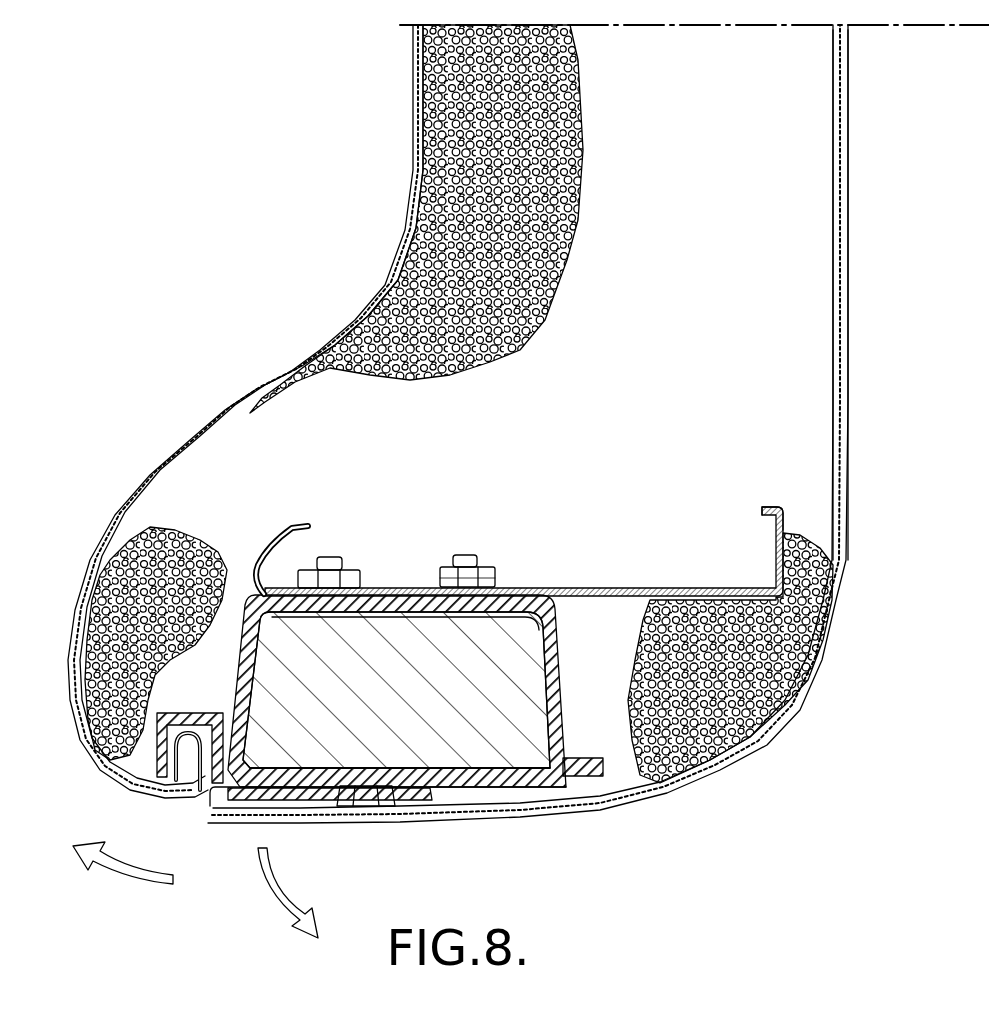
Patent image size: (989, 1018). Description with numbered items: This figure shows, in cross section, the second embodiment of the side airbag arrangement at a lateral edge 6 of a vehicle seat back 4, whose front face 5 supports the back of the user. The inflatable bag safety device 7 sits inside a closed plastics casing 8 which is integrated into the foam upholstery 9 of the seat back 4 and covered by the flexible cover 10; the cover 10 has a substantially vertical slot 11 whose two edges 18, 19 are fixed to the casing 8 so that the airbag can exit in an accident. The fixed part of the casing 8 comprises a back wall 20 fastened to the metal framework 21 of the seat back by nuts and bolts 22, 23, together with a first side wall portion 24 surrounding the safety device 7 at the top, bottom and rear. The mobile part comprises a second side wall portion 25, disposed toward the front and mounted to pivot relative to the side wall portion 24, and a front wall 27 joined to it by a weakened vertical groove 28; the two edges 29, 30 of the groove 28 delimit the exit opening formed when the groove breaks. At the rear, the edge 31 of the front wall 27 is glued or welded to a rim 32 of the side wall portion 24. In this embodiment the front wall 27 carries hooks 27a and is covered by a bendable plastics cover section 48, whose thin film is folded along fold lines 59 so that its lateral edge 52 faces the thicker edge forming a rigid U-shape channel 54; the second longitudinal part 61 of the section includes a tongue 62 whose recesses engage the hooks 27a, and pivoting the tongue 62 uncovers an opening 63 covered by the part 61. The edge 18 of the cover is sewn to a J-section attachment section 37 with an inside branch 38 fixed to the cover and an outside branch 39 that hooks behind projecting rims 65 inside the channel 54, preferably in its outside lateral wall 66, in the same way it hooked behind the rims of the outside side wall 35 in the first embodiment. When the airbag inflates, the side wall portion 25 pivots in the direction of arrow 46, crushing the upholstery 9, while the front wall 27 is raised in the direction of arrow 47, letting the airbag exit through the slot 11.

The seat back 4 is at (798, 102).
The front face 5 is at (412, 95).
The lateral edge 6 is at (680, 791).
The inflatable bag safety device 7 is at (556, 589).
The casing 8 is at (588, 607).
The foam upholstery 9 is at (98, 570).
The cover 10 is at (228, 400).
The slot 11 is at (205, 818).
The edge of the slot 18 is at (203, 793).
The edge of the slot 19 is at (215, 808).
The back wall 20 is at (404, 588).
The metal framework 21 is at (773, 505).
The nuts and bolts 22 is at (466, 556).
The nuts and bolts 23 is at (489, 573).
The first side wall portion 24 is at (558, 693).
The second side wall portion 25 is at (267, 571).
The front wall 27 is at (518, 787).
The hooks 27a is at (366, 806).
The vertical groove 28 is at (270, 766).
The edge of the groove 29 is at (257, 764).
The edge of the groove 30 is at (252, 771).
The edge of the front wall 31 is at (594, 779).
The rim 32 is at (592, 758).
The outside side wall 35 is at (160, 790).
The attachment section 37 is at (180, 714).
The inside branch 38 is at (185, 788).
The outside branch 39 is at (146, 740).
The arrow 46 is at (120, 873).
The arrow 47 is at (287, 915).
The cover section 48 is at (433, 818).
The lateral edge 52 is at (228, 805).
The U-shape channel 54 is at (205, 704).
The fold lines 59 is at (348, 802).
The second longitudinal part 61 is at (303, 805).
The tongue 62 is at (428, 806).
The opening 63 is at (262, 808).
The projecting rims 65 is at (170, 797).
The outside lateral wall 66 is at (156, 773).